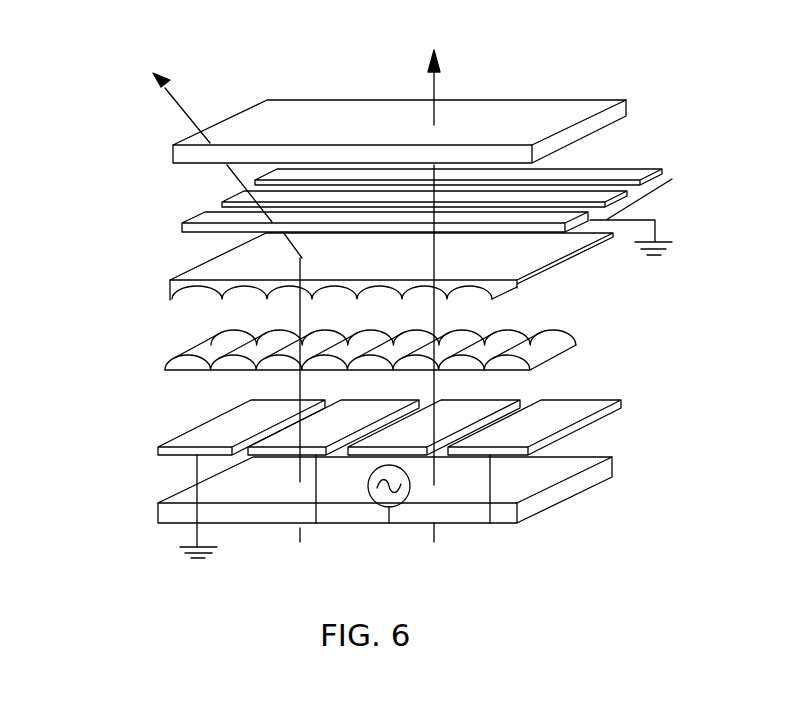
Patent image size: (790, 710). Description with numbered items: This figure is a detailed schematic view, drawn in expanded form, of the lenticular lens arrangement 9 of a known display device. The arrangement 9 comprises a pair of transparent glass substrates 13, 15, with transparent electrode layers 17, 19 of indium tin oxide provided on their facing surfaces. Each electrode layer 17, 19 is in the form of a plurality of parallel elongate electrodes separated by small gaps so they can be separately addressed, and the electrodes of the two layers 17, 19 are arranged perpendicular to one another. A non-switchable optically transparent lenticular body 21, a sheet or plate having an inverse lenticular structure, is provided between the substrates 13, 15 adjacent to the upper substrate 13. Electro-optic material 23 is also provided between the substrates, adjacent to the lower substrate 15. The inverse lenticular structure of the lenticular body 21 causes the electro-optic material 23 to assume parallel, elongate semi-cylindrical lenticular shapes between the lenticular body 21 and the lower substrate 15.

The lenticular lens arrangement 9 is at (103, 84).
The upper transparent glass substrate 13 is at (173, 156).
The transparent electrode layer 17 is at (182, 228).
The lenticular body 21 is at (170, 290).
The electro-optic material 23 is at (166, 369).
The transparent electrode layer 19 is at (158, 451).
The lower transparent glass substrate 15 is at (158, 513).